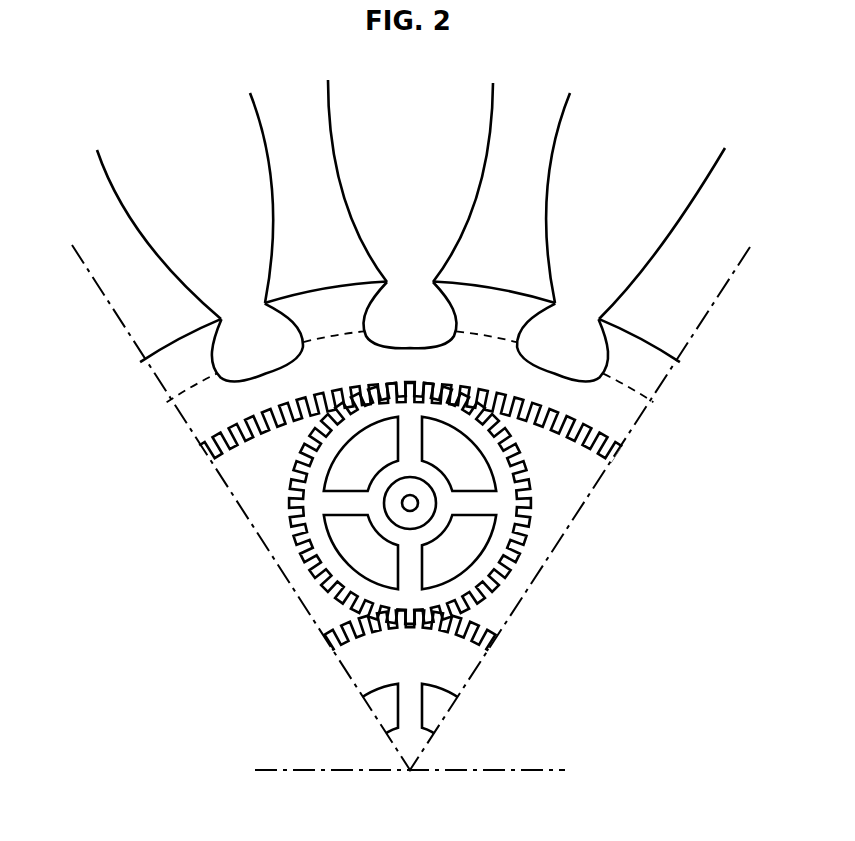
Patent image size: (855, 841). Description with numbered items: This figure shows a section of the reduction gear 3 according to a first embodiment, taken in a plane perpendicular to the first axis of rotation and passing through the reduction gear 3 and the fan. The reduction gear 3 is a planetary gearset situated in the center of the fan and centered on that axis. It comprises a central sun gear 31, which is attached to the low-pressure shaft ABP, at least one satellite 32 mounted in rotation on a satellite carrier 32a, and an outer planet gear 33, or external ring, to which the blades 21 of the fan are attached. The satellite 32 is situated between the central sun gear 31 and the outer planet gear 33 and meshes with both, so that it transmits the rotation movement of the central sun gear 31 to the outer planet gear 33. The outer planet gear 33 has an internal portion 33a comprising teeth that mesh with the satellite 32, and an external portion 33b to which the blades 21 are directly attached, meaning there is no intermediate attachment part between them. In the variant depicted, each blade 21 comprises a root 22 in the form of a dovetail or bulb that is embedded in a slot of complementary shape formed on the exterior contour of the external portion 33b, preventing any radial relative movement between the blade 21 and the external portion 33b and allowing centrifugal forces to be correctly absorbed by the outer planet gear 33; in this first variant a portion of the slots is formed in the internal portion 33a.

The reduction gear 3 is at (612, 588).
The blade 21 is at (218, 212).
The root 22 is at (256, 346).
The central sun gear 31 is at (453, 667).
The satellite 32 is at (420, 503).
The satellite carrier 32a is at (398, 515).
The outer planet gear 33 is at (388, 386).
The internal portion 33a is at (215, 403).
The external portion 33b is at (173, 365).
The low-pressure shaft ABP is at (411, 732).